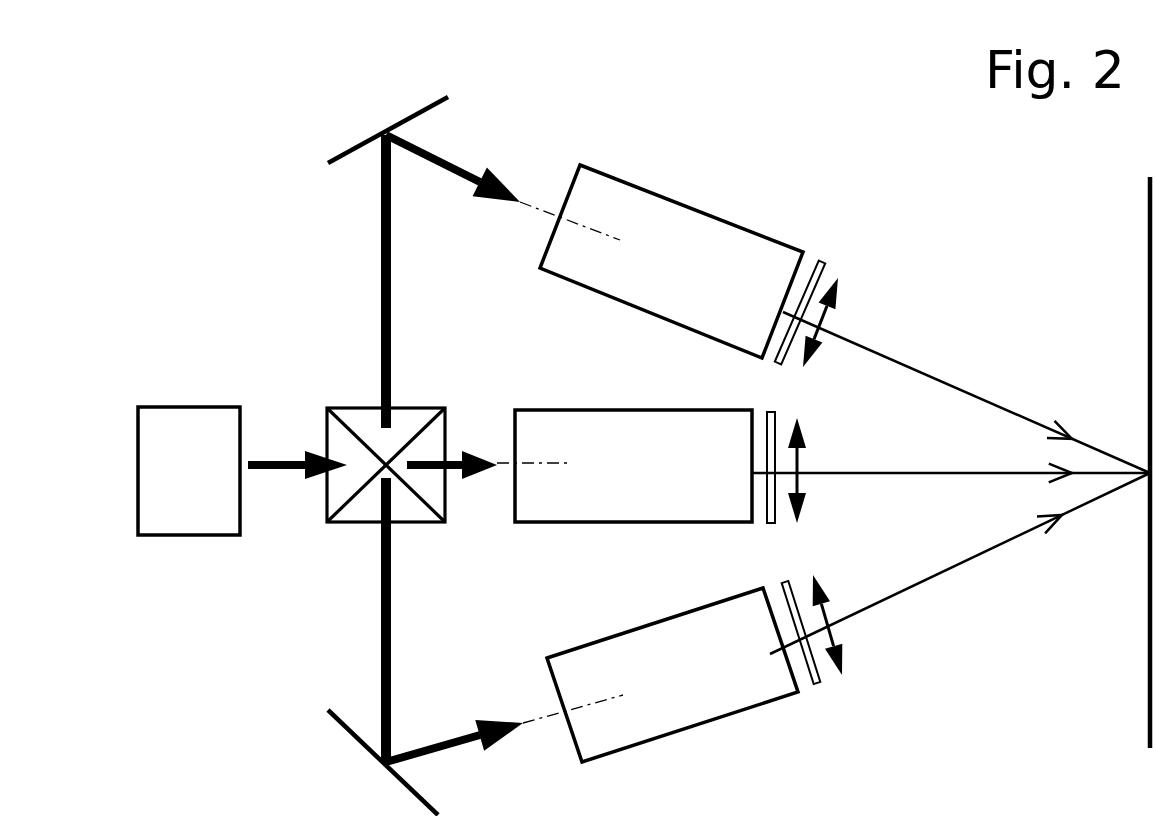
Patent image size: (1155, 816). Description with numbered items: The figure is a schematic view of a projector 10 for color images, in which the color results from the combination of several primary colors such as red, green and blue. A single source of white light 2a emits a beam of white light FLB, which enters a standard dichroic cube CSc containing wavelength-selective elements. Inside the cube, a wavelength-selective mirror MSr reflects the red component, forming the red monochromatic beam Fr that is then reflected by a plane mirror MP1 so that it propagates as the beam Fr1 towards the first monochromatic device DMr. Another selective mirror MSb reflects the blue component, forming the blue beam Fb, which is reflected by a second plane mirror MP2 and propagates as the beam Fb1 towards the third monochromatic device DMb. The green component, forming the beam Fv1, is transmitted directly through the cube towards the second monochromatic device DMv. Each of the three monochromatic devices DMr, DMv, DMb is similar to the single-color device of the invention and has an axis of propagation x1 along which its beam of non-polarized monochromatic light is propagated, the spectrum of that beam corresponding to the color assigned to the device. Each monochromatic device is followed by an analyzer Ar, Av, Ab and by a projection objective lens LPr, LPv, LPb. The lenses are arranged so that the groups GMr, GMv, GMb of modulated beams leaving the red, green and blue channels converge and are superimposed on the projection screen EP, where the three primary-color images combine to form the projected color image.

The projector 10 is at (883, 72).
The single source of white light 2a is at (172, 404).
The beam of white light FLB is at (290, 445).
The dichroic cube CSc is at (442, 408).
The selective mirror MSb is at (345, 422).
The wavelength-selective mirror MSr is at (358, 510).
The monochromatic beam Fv1 is at (456, 468).
The red light beam Fr is at (381, 287).
The blue light beam Fb is at (381, 655).
The plane mirror MP1 is at (420, 117).
The plane mirror MP2 is at (392, 774).
The monochromatic beam Fr1 is at (442, 161).
The monochromatic beam Fb1 is at (430, 747).
The axis of propagation x1 is at (548, 214).
The first monochromatic device DMr is at (698, 210).
The second monochromatic device DMv is at (601, 410).
The third monochromatic device DMb is at (673, 725).
The analyzer Ar is at (817, 261).
The analyzer Av is at (775, 414).
The analyzer Ab is at (817, 683).
The projection objective lens LPr is at (838, 277).
The projection objective lens LPv is at (799, 523).
The projection objective lens LPb is at (843, 676).
The group of modulated beams GMr is at (888, 353).
The group of modulated beams GMv is at (852, 455).
The group of modulated beams GMb is at (860, 611).
The projection screen EP is at (1148, 728).